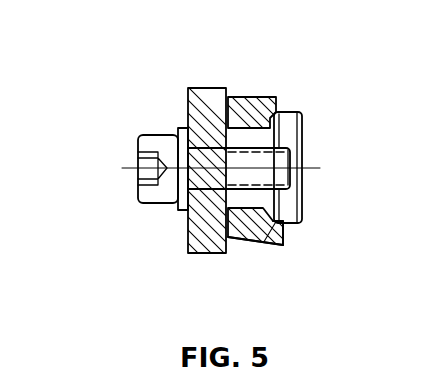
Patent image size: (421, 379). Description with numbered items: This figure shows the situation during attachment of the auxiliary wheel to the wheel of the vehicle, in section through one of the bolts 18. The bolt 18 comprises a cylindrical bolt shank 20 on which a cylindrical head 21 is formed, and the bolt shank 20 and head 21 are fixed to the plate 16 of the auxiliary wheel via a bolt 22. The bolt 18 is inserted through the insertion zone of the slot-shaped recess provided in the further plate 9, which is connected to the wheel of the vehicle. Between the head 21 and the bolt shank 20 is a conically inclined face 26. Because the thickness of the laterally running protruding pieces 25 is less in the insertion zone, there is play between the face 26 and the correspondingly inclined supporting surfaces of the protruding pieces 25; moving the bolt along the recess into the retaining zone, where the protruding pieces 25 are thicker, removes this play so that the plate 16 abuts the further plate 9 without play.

The further plate 9 is at (283, 243).
The plate 16 is at (187, 234).
The bolt 18 is at (312, 139).
The bolt shank 20 is at (268, 199).
The head 21 is at (288, 112).
The bolt 22 is at (139, 138).
The protruding pieces 25 is at (247, 108).
The face 26 is at (302, 217).